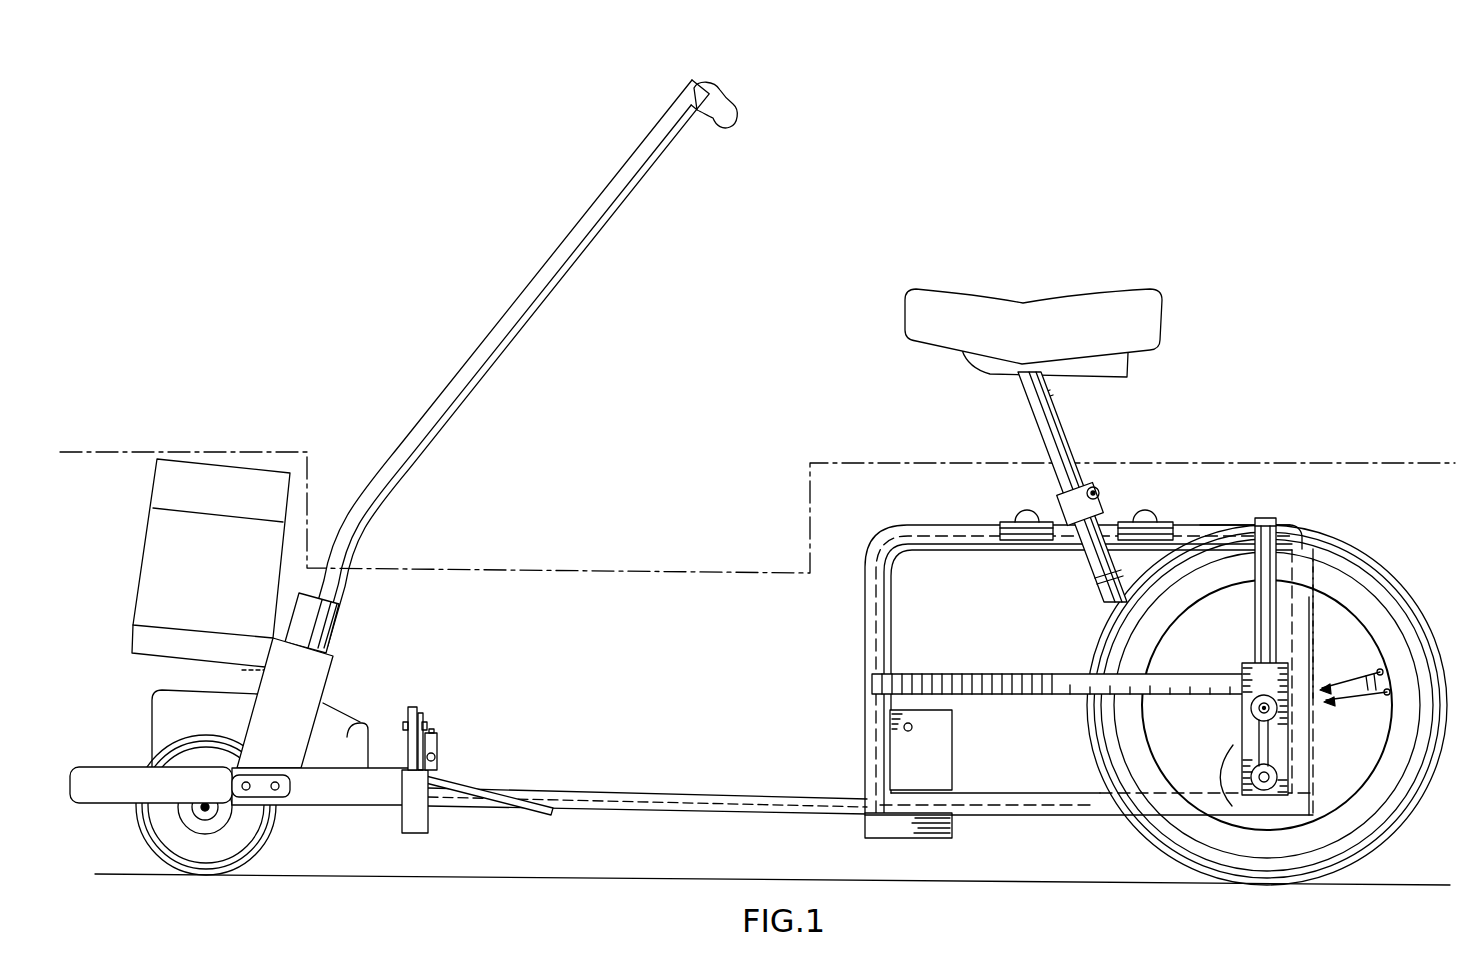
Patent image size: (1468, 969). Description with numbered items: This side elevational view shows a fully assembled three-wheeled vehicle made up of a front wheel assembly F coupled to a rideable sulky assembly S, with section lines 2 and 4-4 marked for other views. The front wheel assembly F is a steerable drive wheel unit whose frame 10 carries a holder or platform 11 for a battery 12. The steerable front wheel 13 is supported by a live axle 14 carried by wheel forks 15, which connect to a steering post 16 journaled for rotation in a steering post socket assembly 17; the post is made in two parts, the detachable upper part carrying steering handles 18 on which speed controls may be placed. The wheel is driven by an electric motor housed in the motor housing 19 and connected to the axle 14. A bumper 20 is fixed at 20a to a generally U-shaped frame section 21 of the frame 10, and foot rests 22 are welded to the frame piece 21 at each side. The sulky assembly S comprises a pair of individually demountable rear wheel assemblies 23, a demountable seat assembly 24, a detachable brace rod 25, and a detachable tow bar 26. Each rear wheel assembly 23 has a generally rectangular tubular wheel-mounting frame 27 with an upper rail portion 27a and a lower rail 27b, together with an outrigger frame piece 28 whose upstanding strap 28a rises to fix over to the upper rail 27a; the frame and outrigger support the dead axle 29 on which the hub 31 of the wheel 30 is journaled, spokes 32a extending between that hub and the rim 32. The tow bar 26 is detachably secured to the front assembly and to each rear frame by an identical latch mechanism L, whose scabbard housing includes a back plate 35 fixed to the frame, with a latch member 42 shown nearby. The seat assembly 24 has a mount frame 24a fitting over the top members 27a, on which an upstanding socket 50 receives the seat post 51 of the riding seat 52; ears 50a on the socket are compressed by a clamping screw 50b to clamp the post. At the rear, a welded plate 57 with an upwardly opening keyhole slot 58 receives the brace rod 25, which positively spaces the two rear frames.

The section line 2- 2 is at (67, 478).
The frame 10 is at (324, 704).
The holder or platform 11 is at (165, 663).
The battery 12 is at (226, 585).
The steerable front wheel 13 is at (262, 838).
The axle 14 is at (208, 812).
The wheel forks 15 is at (203, 812).
The steering post 16 is at (403, 468).
The steering post socket assembly 17 is at (244, 676).
The steering handles 18 is at (712, 106).
The motor housing 19 is at (361, 730).
The bumper 20 is at (108, 802).
The bumper fixing 20a is at (275, 781).
The U-shaped frame section 21 is at (372, 804).
The foot rests 22 is at (468, 791).
The rear wheel assembly 23 is at (1322, 638).
The seat assembly 24 is at (1070, 438).
The mount frame 24a is at (1040, 520).
The brace rod 25 is at (1277, 774).
The connecting or tow bar 26 is at (754, 786).
The tubular wheel-mounting frame 27 is at (890, 618).
The upper rail portion 27a is at (1232, 530).
The rear frame bottom tube 27b is at (1002, 797).
The outrigger frame piece 28 is at (1062, 677).
The upstanding strap 28a is at (1294, 542).
The dead axle 29 is at (1269, 706).
The wheel 30 is at (1366, 843).
The hub 31 is at (1250, 708).
The rim 32 is at (1394, 737).
The spokes 32a is at (1355, 698).
The back plate 35 is at (935, 760).
The latch plate 42 is at (412, 718).
The socket 50 is at (1112, 512).
The ears 50a is at (1094, 489).
The clamping screw 50b is at (1100, 492).
The seat post 51 is at (1104, 600).
The riding seat 52 is at (1142, 333).
The plate 57 is at (1252, 740).
The keyhole slot 58 is at (1277, 782).
The section line 4-4 is at (1218, 780).
The front wheel assembly F is at (348, 651).
The latch mechanism L is at (436, 722).
The rideable sulky assembly S is at (1218, 520).